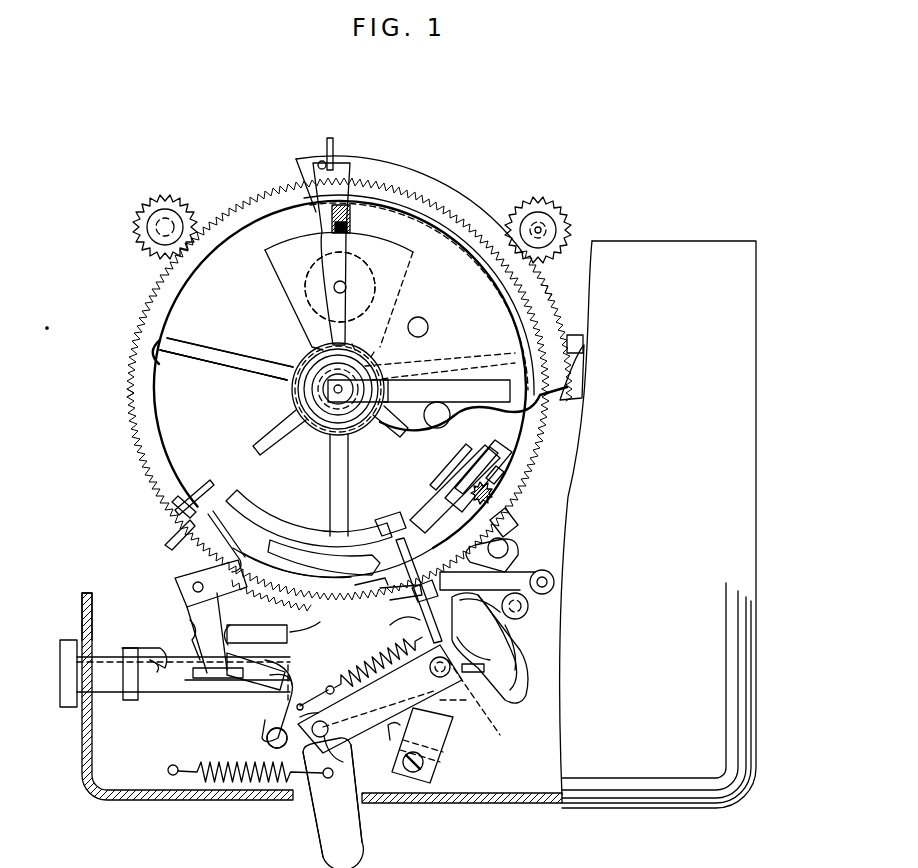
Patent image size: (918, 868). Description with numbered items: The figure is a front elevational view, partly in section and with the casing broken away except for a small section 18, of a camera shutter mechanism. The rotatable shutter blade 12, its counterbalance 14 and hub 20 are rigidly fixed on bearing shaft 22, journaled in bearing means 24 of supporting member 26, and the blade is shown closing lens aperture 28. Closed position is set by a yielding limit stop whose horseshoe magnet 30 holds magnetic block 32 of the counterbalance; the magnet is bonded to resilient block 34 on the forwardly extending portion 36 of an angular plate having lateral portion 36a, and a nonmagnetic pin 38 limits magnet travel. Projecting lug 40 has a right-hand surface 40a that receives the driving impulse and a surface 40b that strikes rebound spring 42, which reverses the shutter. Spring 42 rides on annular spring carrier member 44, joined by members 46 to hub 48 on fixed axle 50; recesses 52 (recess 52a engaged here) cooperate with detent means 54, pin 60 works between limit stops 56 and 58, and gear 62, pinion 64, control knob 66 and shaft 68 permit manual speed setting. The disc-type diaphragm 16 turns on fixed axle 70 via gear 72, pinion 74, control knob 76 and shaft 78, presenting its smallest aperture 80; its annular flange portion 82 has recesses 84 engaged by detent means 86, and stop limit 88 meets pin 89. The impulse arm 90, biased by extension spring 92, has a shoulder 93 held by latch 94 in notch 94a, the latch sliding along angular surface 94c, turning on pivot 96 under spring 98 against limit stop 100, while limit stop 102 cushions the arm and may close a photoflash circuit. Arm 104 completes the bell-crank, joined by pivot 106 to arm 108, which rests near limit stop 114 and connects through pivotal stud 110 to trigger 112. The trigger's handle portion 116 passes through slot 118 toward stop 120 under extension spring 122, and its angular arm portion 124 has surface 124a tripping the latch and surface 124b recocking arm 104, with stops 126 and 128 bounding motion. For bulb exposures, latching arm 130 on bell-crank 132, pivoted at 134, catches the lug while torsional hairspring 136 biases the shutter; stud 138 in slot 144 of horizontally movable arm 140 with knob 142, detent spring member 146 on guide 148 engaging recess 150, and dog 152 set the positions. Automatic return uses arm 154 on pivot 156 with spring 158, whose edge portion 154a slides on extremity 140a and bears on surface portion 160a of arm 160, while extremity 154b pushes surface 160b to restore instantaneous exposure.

The shutter blade 12 is at (264, 285).
The shutter blade counterbalance 14 is at (339, 466).
The disc-type diaphragm 16 is at (394, 433).
The casing section 18 is at (127, 803).
The hub 20 is at (307, 363).
The bearing shaft or axle 22 is at (350, 389).
The bearing means 24 is at (336, 395).
The supporting member 26 is at (442, 375).
The lens aperture 28 is at (314, 273).
The magnet 30 is at (448, 478).
The magnetic block 32 is at (442, 493).
The resilient block 34 is at (482, 461).
The forwardly extending plate portion 36 is at (502, 423).
The lateral plate portion 36a is at (543, 455).
The pin 38 is at (464, 466).
The projecting lug 40 is at (377, 551).
The right-hand lug surface 40a is at (400, 521).
The lug surface 40b is at (372, 587).
The rebound spring 42 is at (214, 485).
The spring carrier member 44 is at (138, 433).
The connecting members 46 is at (218, 350).
The hub 48 is at (336, 393).
The fixed axle 50 is at (293, 369).
The recesses 52 is at (160, 365).
The recess 52a is at (497, 498).
The detent means 54 is at (504, 480).
The limit stop 56 is at (170, 548).
The limit stop 58 is at (516, 531).
The pin 60 is at (167, 518).
The gear 62 is at (132, 393).
The pinion 64 is at (143, 245).
The control knob 66 is at (162, 215).
The shaft 68 is at (174, 223).
The fixed axle 70 is at (368, 349).
The gear 72 is at (548, 283).
The pinion 74 is at (572, 225).
The control knob 76 is at (552, 218).
The shaft 78 is at (540, 225).
The diaphragm aperture 80 is at (340, 295).
The annular flange portion 82 is at (449, 230).
The recesses 84 is at (482, 276).
The detent means 86 is at (345, 206).
The stop limit 88 is at (334, 143).
The pin 89 is at (322, 165).
The impulse arm 90 is at (420, 555).
The extension spring 92 is at (362, 663).
The shoulder 93 is at (424, 611).
The latch 94 is at (487, 583).
The notched portion 94a is at (397, 595).
The angular surface 94c is at (422, 615).
The pivot 96 is at (551, 578).
The spring 98 is at (524, 558).
The limit stop 100 is at (529, 608).
The limit stop 102 is at (318, 583).
The arm 104 is at (522, 703).
The pivot 106 is at (474, 705).
The arm 108 is at (380, 699).
The pivotal stud 110 is at (345, 765).
The trigger 112 is at (392, 739).
The limit stop 114 is at (492, 683).
The handle portion 116 is at (327, 848).
The slot 118 is at (304, 811).
The stop 120 is at (362, 815).
The extension spring 122 is at (208, 763).
The angular arm portion 124 is at (567, 675).
The arm surface 124a is at (504, 628).
The arm surface 124b is at (507, 658).
The limit stop 126 is at (449, 733).
The limit stop 128 is at (442, 773).
The latching arm 130 is at (236, 533).
The bell-crank 132 is at (180, 611).
The pivot 134 is at (200, 577).
The torsional hairspring 136 is at (324, 437).
The lever-like stud 138 is at (192, 633).
The horizontally movable arm 140 is at (157, 697).
The arm extremity 140a is at (264, 691).
The control knob 142 is at (68, 711).
The slot 144 is at (204, 688).
The spring member 146 is at (148, 651).
The guide 148 is at (128, 693).
The recess 150 is at (162, 671).
The dog 152 is at (94, 610).
The arm 154 is at (264, 721).
The edge portion 154a is at (216, 693).
The arm extremity 154b is at (290, 665).
The pivot 156 is at (282, 751).
The spring 158 is at (334, 693).
The arm 160 is at (288, 629).
The surface portion 160a is at (318, 617).
The surface 160b is at (234, 620).